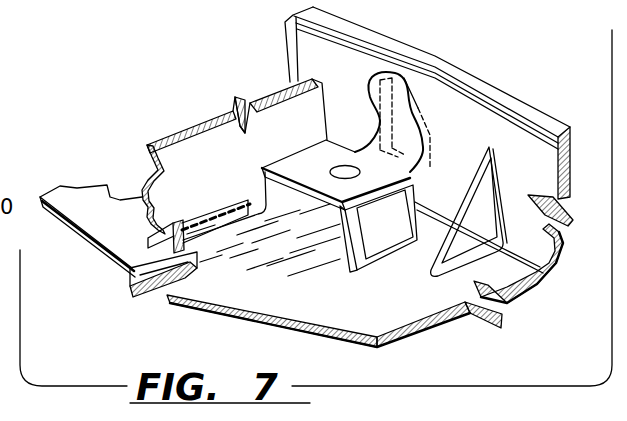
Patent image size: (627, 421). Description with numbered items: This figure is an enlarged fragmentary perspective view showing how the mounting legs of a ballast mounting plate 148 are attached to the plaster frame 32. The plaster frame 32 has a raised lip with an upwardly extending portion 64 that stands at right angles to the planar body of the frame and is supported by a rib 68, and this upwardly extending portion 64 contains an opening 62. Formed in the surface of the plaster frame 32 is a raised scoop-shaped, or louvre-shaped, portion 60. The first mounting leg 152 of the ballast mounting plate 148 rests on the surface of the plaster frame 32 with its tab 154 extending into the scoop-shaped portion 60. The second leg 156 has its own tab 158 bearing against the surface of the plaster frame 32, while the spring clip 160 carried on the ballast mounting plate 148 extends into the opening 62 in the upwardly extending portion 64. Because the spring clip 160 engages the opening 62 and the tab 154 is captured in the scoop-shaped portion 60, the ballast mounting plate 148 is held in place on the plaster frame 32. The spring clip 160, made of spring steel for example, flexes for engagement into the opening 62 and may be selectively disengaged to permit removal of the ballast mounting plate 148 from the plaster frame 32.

The plaster frame 32 is at (228, 310).
The scoop-shaped portions 60 is at (150, 247).
The openings 62 is at (427, 95).
The upwardly extending portions 64 is at (490, 128).
The ribs 68 is at (453, 282).
The ballast mounting plate 148 is at (173, 162).
The first mounting leg 152 is at (200, 245).
The tab 154 is at (133, 267).
The second leg 156 is at (290, 188).
The tab 158 is at (363, 247).
The spring clip 160 is at (386, 74).